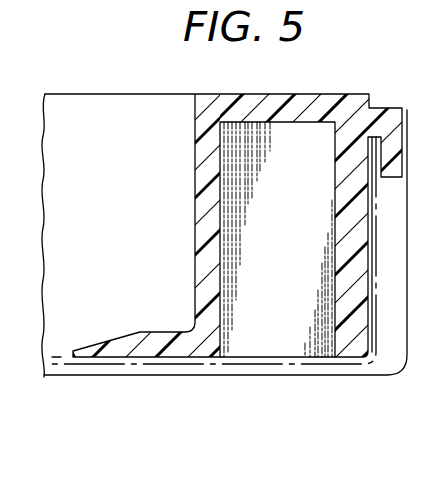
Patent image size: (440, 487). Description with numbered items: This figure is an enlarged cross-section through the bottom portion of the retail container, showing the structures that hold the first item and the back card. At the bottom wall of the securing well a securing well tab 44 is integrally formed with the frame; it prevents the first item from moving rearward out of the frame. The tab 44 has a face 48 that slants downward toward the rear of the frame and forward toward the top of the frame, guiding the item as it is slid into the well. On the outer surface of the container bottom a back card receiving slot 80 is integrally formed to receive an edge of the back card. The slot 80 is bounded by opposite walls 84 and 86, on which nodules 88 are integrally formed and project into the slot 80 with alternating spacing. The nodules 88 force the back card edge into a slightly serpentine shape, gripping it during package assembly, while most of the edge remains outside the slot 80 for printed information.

The securing well tab 44 is at (163, 332).
The face 48 is at (101, 343).
The back card receiving slot 80 is at (383, 178).
The wall 84 is at (372, 148).
The wall 86 is at (377, 150).
The nodule 88 is at (368, 148).